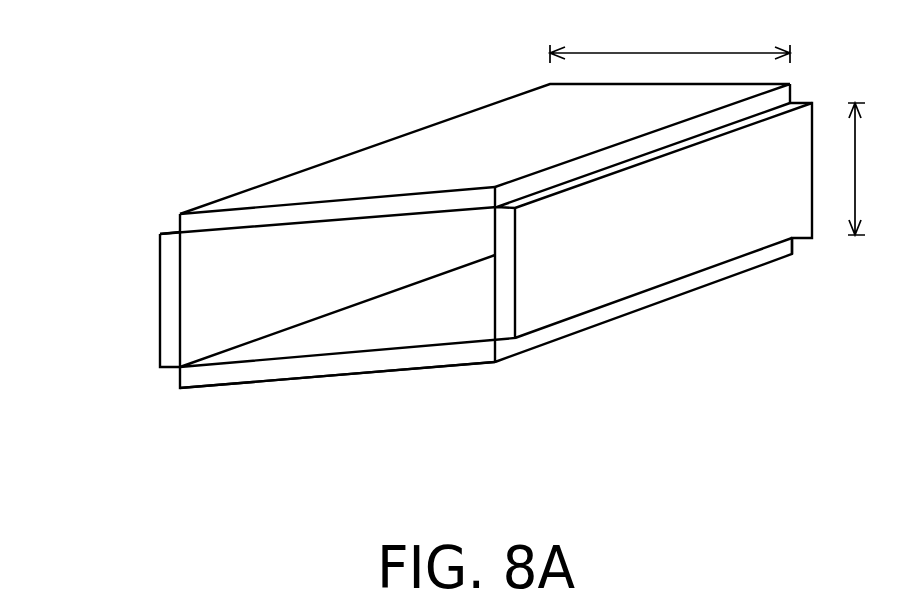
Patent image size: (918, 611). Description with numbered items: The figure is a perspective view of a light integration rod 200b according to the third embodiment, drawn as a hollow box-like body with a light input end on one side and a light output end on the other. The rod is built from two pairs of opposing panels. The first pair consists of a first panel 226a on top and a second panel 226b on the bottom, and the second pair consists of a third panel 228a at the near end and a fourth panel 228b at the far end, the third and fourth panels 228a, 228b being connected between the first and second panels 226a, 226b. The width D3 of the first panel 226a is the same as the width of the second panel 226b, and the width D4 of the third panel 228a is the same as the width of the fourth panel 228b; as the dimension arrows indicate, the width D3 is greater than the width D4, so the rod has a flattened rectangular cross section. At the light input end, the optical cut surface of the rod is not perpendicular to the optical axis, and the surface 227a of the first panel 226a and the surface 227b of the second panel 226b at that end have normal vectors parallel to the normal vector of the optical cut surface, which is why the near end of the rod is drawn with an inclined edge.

The light guide module 200b is at (466, 269).
The first panel 226a is at (485, 128).
The second panel 226b is at (486, 344).
The surface of the first panel 227a is at (250, 220).
The surface of the second panel 227b is at (318, 365).
The third panel 228a is at (170, 303).
The fourth panel 228b is at (703, 247).
The width of the first panel D3 is at (670, 37).
The width of the third panel D4 is at (875, 169).